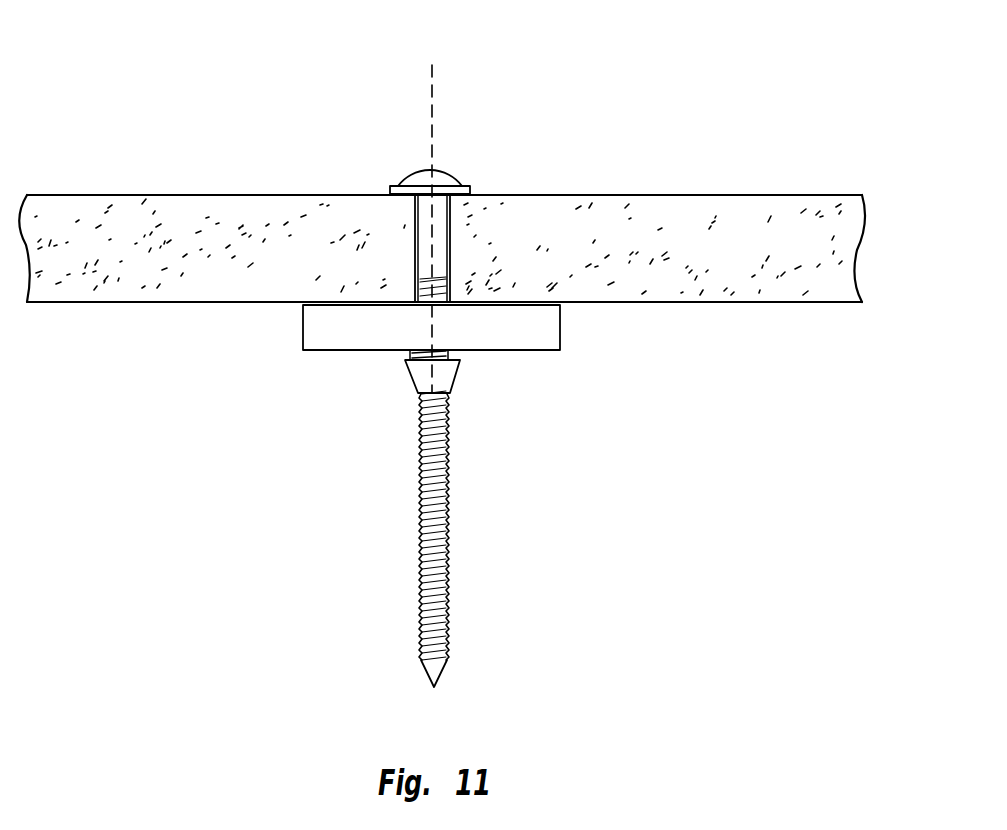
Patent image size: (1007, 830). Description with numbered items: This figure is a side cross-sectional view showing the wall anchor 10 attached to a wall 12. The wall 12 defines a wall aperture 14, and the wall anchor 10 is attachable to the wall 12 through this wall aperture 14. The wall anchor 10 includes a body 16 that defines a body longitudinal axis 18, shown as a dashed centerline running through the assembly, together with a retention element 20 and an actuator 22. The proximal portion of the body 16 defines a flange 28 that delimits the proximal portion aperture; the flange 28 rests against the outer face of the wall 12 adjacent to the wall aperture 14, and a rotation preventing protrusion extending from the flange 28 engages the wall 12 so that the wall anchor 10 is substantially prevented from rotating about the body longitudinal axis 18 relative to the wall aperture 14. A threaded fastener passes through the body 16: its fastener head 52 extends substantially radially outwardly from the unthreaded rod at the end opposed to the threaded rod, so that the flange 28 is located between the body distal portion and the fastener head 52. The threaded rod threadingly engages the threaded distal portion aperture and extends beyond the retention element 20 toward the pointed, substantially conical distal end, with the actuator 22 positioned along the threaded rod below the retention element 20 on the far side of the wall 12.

The wall anchor 10 is at (240, 528).
The wall 12 is at (658, 222).
The wall aperture 14 is at (447, 230).
The body 16 is at (400, 408).
The body longitudinal axis 18 is at (416, 84).
The retention element 20 is at (287, 347).
The actuator 22 is at (473, 552).
The flange 28 is at (400, 198).
The fastener head 52 is at (445, 262).